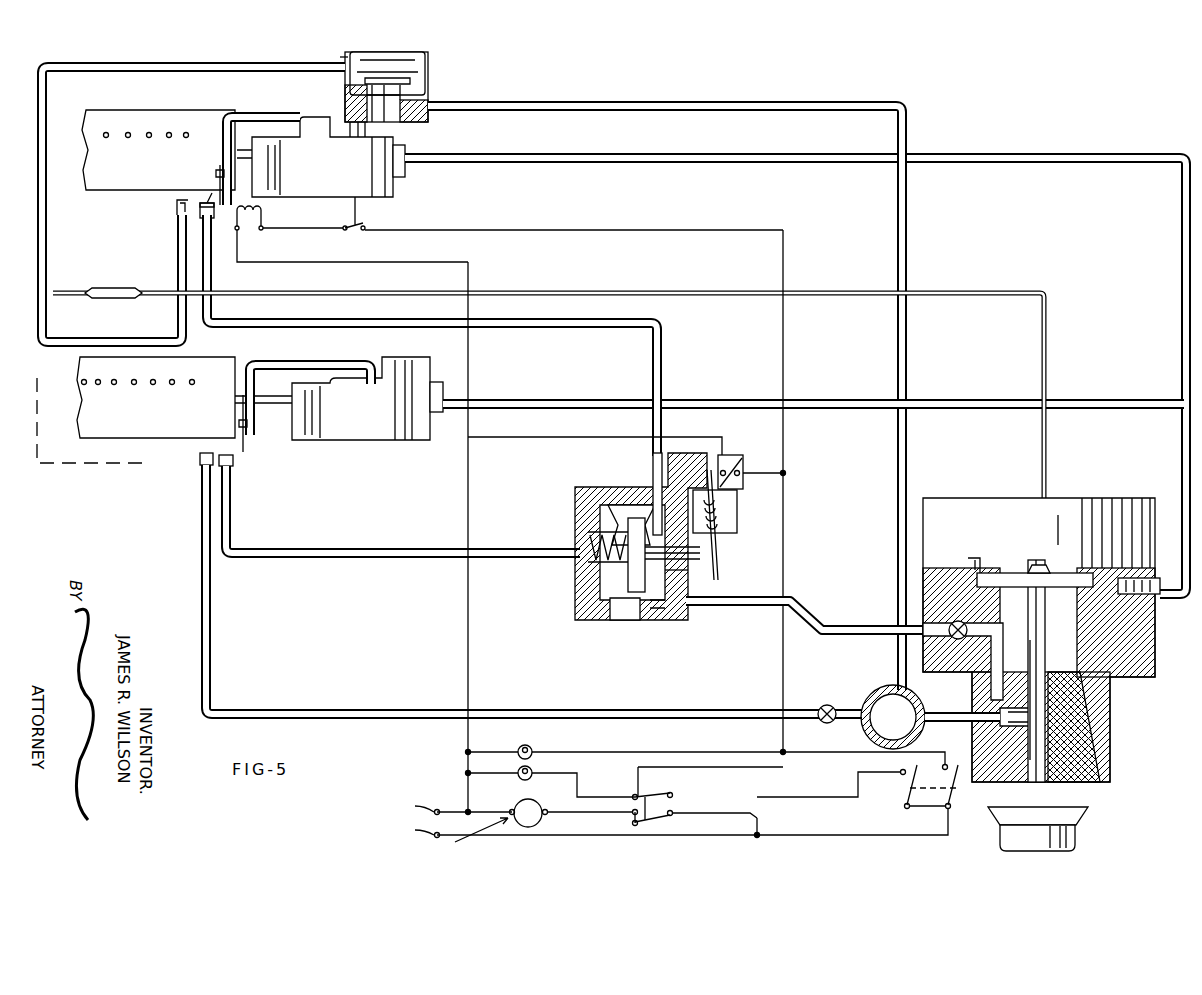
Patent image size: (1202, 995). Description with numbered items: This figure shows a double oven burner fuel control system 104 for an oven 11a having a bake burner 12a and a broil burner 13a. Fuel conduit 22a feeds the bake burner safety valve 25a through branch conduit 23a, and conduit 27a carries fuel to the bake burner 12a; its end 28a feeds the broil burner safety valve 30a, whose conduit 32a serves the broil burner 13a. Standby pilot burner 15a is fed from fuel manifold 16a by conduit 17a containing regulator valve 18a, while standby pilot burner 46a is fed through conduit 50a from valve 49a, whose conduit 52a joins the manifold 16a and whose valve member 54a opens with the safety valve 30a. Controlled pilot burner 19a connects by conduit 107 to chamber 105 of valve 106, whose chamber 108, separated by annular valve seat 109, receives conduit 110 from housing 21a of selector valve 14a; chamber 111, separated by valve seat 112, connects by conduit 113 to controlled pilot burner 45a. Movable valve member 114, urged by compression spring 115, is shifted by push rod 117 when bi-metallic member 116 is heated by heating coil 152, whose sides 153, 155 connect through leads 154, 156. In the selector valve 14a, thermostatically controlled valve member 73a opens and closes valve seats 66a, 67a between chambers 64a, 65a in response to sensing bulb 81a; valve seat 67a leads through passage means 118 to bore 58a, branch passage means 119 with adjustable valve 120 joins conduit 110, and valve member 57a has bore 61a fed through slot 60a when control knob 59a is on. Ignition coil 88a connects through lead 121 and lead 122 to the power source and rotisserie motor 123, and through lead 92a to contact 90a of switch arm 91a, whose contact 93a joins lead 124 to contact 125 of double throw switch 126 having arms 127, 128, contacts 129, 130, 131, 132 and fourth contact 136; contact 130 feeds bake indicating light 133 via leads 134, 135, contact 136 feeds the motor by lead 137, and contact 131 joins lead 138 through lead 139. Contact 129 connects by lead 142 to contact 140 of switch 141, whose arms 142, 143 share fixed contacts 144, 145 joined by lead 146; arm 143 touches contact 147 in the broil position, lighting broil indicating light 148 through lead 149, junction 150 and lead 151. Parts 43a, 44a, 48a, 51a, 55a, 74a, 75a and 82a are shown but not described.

The oven 11a is at (57, 466).
The bake burner 12a is at (157, 432).
The broil burner 13a is at (108, 186).
The selector valve 14a is at (1046, 674).
The standby pilot burner 15a is at (511, 583).
The fuel manifold 16a is at (866, 684).
The conduit 17a is at (316, 708).
The regulator valve 18a is at (824, 706).
The controlled pilot burner 19a is at (399, 504).
The housing 21a is at (1150, 652).
The fuel conduit 22a is at (1180, 458).
The branch conduit 23a is at (962, 400).
The bake burner safety valve 25a is at (339, 388).
The conduit 27a is at (262, 406).
The end of fuel conduit 28a is at (412, 160).
The broil burner safety valve 30a is at (711, 339).
The conduit 32a is at (246, 150).
The igniter 43a is at (218, 172).
The conduit 44a is at (238, 98).
The controlled pilot burner 45a is at (204, 195).
The standby pilot burner 46a is at (180, 220).
The inlet conduit 48a is at (345, 57).
The valve 49a is at (386, 92).
The conduit 50a is at (145, 72).
The regulator outlet 51a is at (403, 122).
The conduit 52a is at (630, 104).
The valve member 54a is at (420, 57).
The regulator housing 55a is at (346, 90).
The valve member 57a is at (1092, 732).
The bore 58a is at (1092, 706).
The control knob 59a is at (1078, 833).
The slot 60a is at (1006, 708).
The bore 61a is at (1028, 648).
The chamber 64a is at (1070, 660).
The chamber 65a is at (975, 566).
The annular valve seat 66a is at (1090, 605).
The smaller annular valve seat 67a is at (966, 622).
The thermostatically controlled valve member 73a is at (996, 572).
The stem 74a is at (1050, 750).
The pivot 75a is at (1036, 566).
The sensing bulb 81a is at (113, 288).
The bellows 82a is at (1145, 596).
The electrical ignition coil 88a is at (260, 208).
The contact 90a is at (346, 232).
The switch arm 91a is at (358, 226).
The lead 92a is at (283, 234).
The contact 93a is at (368, 230).
The double oven burner fuel control system 104 is at (1101, 104).
The chamber 105 is at (600, 506).
The valve 106 is at (639, 560).
The conduit 107 is at (494, 548).
The chamber 108 is at (652, 490).
The annular valve seat 109 is at (618, 504).
The conduit 110 is at (798, 605).
The chamber 111 is at (680, 572).
The annular valve seat 112 is at (643, 604).
The conduit 113 is at (592, 325).
The movable valve member 114 is at (616, 604).
The compression spring 115 is at (576, 602).
The bi-metallic member 116 is at (716, 562).
The push rod 117 is at (692, 545).
The passage means 118 is at (998, 645).
The branch passage means 119 is at (945, 624).
The adjustable valve 120 is at (962, 697).
The lead 121 is at (418, 262).
The lead 122 is at (443, 800).
The rotisserie motor 123 is at (535, 808).
The lead 124 is at (718, 232).
The contact 125 is at (636, 780).
The double throw switch 126 is at (676, 786).
The arm 127 is at (654, 786).
The arm 128 is at (680, 822).
The fixed contact 129 is at (674, 795).
The contact 130 is at (630, 797).
The fixed contact 131 is at (676, 812).
The contact 132 is at (632, 828).
The bake indicating light 133 is at (515, 773).
The lead 134 is at (535, 777).
The lead 135 is at (475, 775).
The fourth contact 136 is at (630, 815).
The lead 137 is at (558, 828).
The lead 138 is at (497, 830).
The lead 139 is at (757, 818).
The contact 140 is at (889, 786).
The switch 141 is at (912, 826).
The switch arm 142 is at (817, 800).
The arm 143 is at (956, 788).
The fixed contact 144 is at (890, 814).
The fixed contact 145 is at (953, 812).
The lead 146 is at (910, 812).
The contact 147 is at (947, 764).
The broil indicating light 148 is at (530, 747).
The lead 149 is at (643, 751).
The junction 150 is at (780, 750).
The lead 151 is at (505, 752).
The heating coil 152 is at (720, 516).
The side of heater means 153 is at (726, 468).
The lead 154 is at (540, 440).
The side of heater means 155 is at (740, 470).
The lead 156 is at (768, 485).